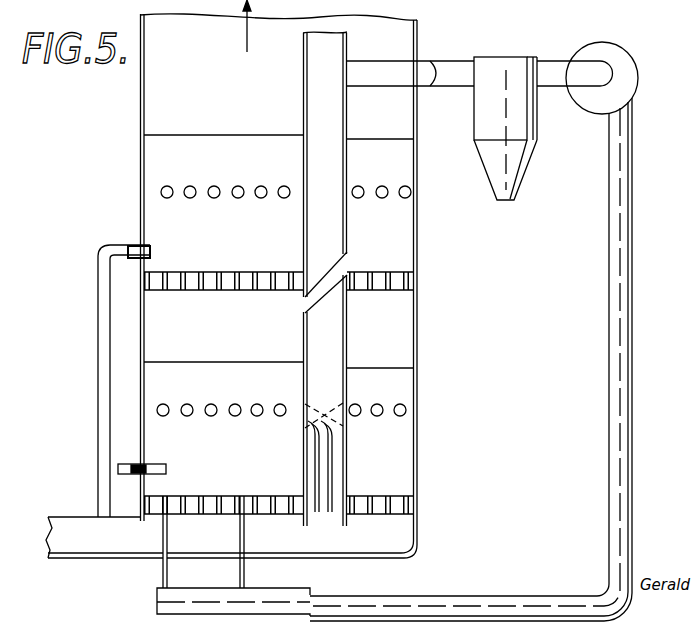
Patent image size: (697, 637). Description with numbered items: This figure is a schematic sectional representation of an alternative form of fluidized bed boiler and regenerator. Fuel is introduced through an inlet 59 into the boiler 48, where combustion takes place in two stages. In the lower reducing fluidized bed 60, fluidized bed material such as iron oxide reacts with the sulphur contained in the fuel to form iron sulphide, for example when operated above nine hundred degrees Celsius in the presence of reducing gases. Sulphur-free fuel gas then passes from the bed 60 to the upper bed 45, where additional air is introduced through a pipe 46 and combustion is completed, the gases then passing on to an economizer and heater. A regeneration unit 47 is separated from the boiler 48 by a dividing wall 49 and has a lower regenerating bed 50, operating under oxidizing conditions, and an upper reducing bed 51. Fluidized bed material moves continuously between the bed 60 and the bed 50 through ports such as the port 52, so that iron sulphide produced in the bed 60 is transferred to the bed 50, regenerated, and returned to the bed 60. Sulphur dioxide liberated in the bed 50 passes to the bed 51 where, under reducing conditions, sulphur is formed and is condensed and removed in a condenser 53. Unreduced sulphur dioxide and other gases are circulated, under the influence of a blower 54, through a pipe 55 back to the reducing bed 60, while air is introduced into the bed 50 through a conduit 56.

The upper bed 45 is at (153, 206).
The pipe 46 is at (104, 478).
The regeneration unit 47 is at (418, 311).
The boiler 48 is at (137, 312).
The dividing wall 49 is at (324, 160).
The lower regenerating bed 50 is at (406, 437).
The upper reducing bed 51 is at (424, 212).
The port 52 is at (339, 415).
The condenser 53 is at (489, 85).
The blower 54 is at (627, 68).
The pipe 55 is at (614, 364).
The conduit 56 is at (82, 533).
The inlet 59 is at (130, 466).
The lower reducing fluidized bed 60 is at (182, 472).